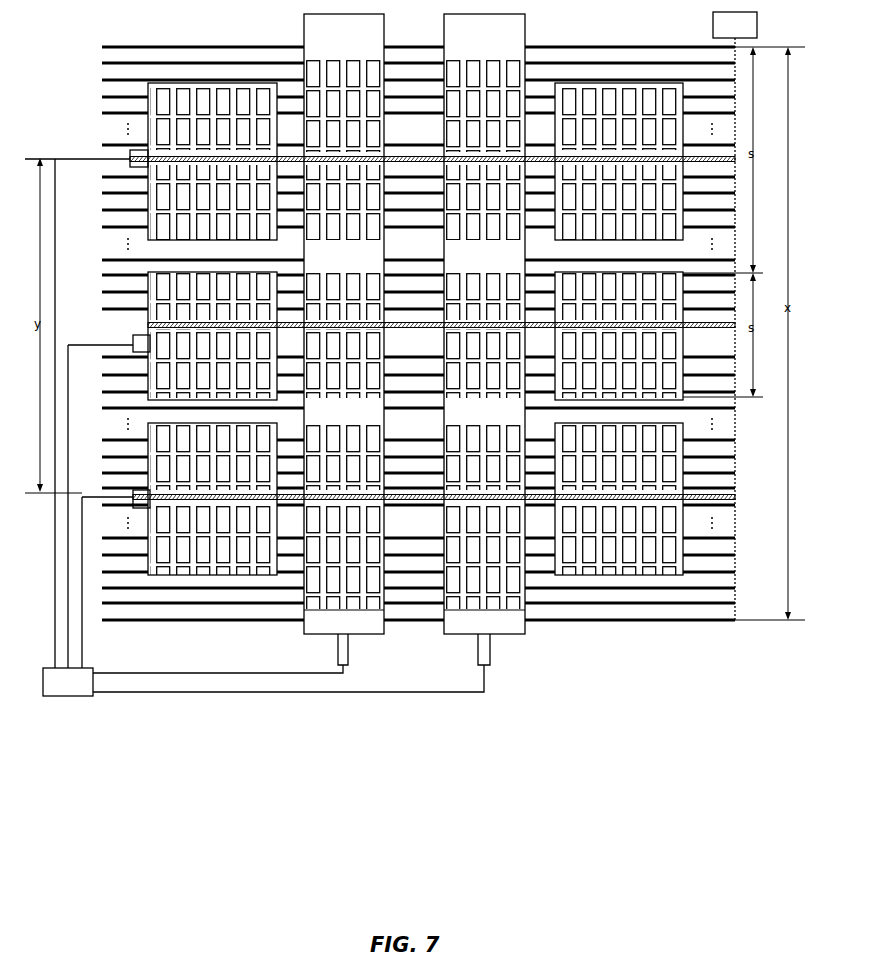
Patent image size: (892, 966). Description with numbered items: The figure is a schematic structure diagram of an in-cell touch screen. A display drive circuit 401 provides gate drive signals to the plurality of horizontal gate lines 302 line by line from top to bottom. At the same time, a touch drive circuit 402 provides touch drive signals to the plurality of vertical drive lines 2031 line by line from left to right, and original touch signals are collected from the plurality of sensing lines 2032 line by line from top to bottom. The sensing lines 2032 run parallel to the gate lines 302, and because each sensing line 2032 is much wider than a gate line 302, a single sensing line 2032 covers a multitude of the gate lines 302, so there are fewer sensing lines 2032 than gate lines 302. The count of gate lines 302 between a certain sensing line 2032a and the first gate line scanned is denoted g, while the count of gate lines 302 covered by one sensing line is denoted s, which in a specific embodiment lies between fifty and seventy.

The gate lines 302 is at (628, 622).
The display drive circuit 401 is at (757, 24).
The touch drive circuit 402 is at (67, 700).
The drive lines 2031 is at (515, 668).
The sensing lines 2032 is at (177, 577).
The sensing line 2032a is at (133, 342).